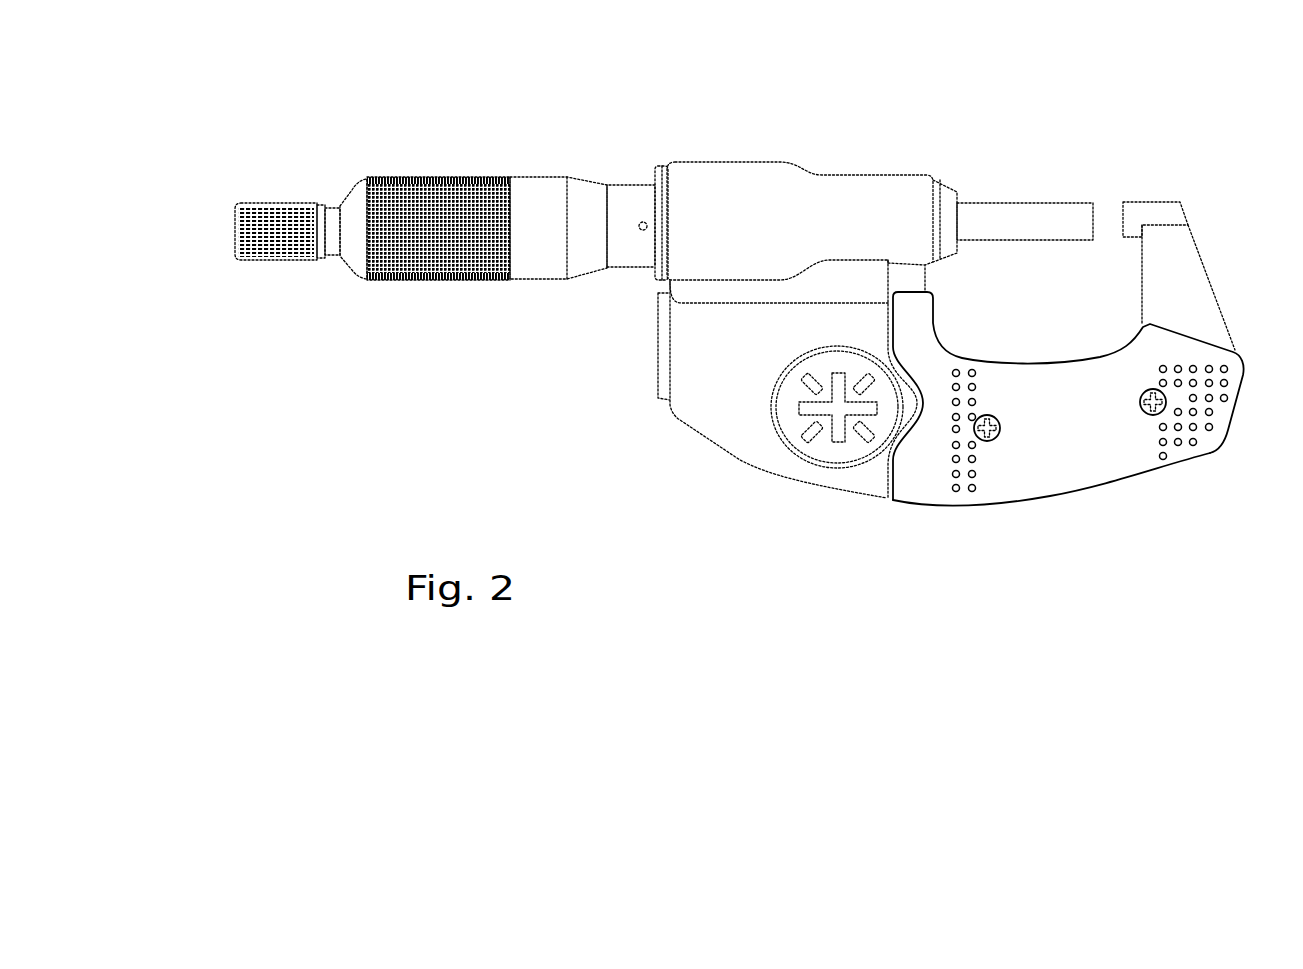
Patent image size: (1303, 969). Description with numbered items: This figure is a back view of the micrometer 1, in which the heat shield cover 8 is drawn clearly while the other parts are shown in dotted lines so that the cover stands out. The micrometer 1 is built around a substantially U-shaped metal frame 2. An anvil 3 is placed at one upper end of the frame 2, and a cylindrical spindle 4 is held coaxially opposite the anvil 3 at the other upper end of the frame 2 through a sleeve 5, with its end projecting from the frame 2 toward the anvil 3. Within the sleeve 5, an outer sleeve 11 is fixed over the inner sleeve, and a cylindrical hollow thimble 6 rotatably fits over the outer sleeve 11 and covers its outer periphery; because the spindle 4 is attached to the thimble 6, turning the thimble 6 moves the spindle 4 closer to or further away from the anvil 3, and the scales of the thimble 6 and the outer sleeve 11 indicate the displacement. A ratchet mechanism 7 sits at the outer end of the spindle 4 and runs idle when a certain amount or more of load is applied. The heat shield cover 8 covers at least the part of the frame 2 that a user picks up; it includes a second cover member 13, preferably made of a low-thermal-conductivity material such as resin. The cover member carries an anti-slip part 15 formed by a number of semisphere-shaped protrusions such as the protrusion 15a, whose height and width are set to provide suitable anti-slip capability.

The micrometer 1 is at (1198, 62).
The frame 2 is at (1190, 253).
The anvil 3 is at (1140, 222).
The spindle 4 is at (1023, 222).
The sleeve 5 is at (618, 172).
The thimble 6 is at (418, 177).
The ratchet mechanism 7 is at (336, 181).
The heat shield cover 8 is at (1007, 505).
The outer sleeve 11 is at (628, 262).
The second cover member 13 is at (1098, 465).
The anti-slip part 15 is at (1198, 450).
The protrusion 15a is at (1212, 414).